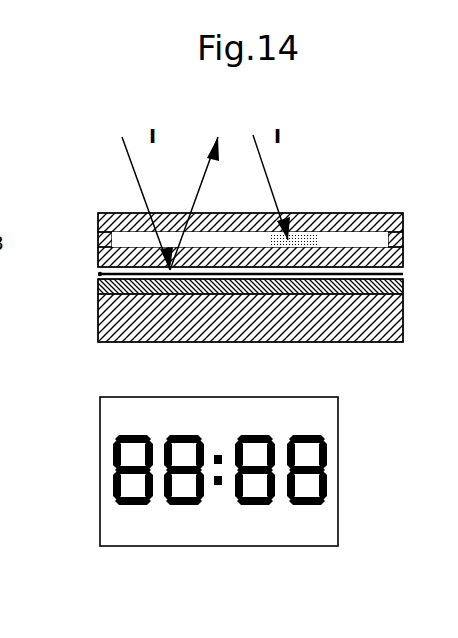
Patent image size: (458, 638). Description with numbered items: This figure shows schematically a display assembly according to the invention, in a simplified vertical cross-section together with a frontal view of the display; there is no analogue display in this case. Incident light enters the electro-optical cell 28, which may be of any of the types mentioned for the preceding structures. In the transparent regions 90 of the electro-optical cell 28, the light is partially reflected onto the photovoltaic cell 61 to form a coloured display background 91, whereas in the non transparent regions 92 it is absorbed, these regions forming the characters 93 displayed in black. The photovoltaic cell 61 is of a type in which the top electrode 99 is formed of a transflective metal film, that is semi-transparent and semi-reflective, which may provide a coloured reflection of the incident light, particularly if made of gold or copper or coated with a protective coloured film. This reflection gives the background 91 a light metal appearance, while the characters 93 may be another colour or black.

The electro-optical cell 28 is at (418, 213).
The transparent regions 90 is at (218, 238).
The non transparent regions 92 is at (303, 238).
The top electrode 99 is at (99, 274).
The photovoltaic cell 61 is at (418, 274).
The display background 91 is at (100, 530).
The characters 93 is at (113, 487).